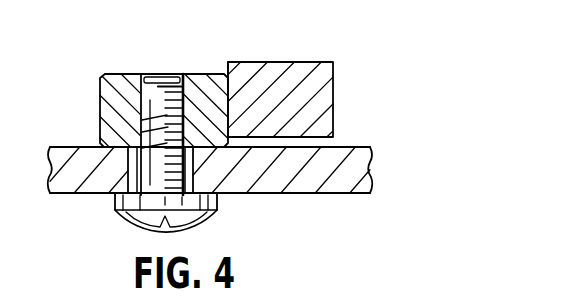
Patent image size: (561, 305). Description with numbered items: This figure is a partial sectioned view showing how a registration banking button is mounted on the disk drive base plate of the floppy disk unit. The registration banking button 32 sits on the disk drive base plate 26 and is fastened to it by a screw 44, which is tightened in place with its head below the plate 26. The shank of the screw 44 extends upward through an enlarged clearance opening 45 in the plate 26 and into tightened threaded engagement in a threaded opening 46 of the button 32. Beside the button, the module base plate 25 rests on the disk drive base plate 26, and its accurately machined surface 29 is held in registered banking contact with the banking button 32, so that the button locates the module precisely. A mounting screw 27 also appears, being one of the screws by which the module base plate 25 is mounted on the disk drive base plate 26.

The module base plate 25 is at (333, 97).
The disk drive base plate 26 is at (382, 151).
The mounting screw 27 is at (162, 74).
The accurately machined surface 29 is at (227, 62).
The registration banking button 32 is at (100, 97).
The screw 44 is at (118, 212).
The enlarged clearance opening 45 is at (190, 173).
The threaded opening 46 is at (128, 74).